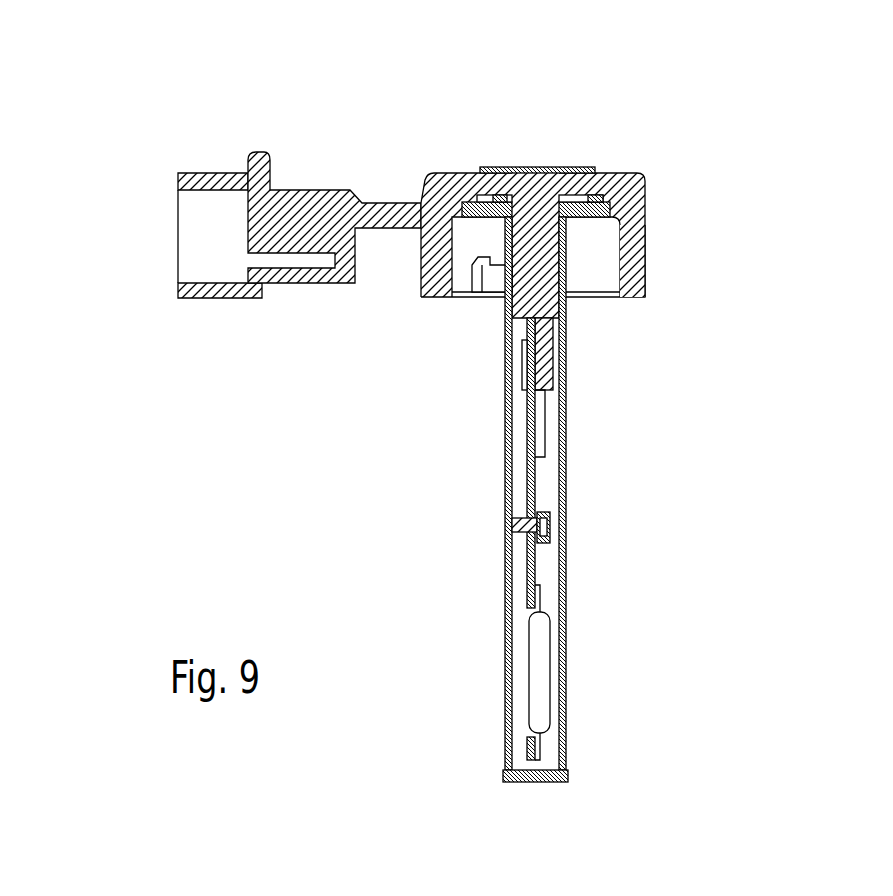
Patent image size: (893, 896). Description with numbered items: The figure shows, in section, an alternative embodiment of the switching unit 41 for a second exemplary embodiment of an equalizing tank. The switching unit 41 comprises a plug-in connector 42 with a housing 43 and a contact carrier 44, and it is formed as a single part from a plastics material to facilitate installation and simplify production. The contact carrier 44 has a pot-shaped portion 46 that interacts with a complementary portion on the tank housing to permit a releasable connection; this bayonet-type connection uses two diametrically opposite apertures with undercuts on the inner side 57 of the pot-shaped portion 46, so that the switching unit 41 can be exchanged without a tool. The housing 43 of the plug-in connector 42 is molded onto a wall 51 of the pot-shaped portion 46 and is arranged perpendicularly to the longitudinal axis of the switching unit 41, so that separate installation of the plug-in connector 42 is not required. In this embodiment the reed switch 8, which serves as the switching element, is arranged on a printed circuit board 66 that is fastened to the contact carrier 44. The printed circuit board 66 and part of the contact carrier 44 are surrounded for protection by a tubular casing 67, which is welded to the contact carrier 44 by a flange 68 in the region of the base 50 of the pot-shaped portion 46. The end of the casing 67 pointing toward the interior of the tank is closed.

The switching unit 41 is at (347, 110).
The plug-in connector 42 is at (146, 256).
The housing 43 is at (303, 222).
The contact carrier 44 is at (537, 300).
The pot-shaped portion 46 is at (658, 240).
The base 50 is at (598, 187).
The wall 51 is at (630, 268).
The inner side 57 is at (458, 300).
The printed circuit board 66 is at (537, 484).
The tubular casing 67 is at (566, 568).
The flange 68 is at (608, 210).
The reed switch 8 is at (538, 668).